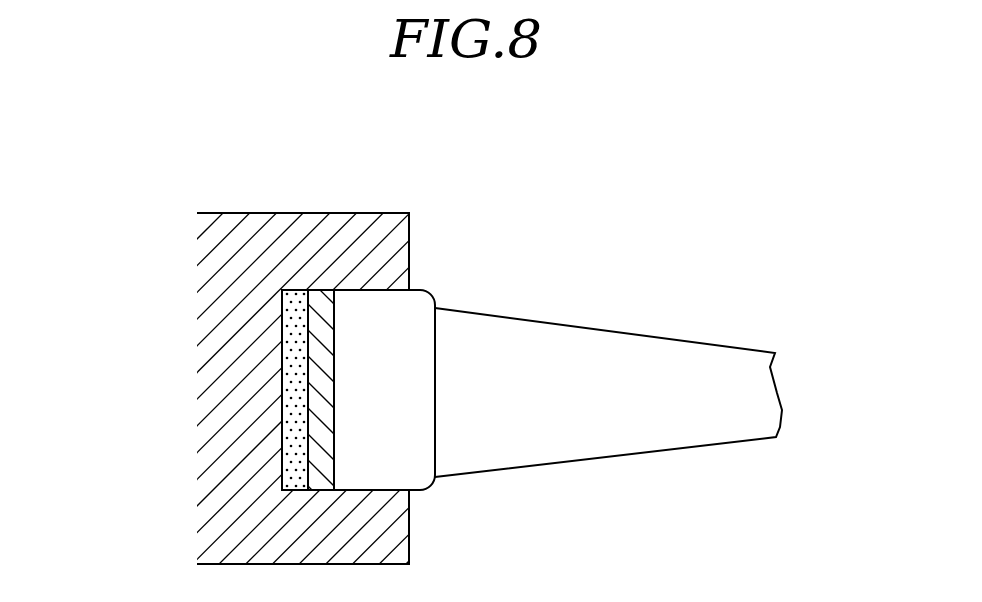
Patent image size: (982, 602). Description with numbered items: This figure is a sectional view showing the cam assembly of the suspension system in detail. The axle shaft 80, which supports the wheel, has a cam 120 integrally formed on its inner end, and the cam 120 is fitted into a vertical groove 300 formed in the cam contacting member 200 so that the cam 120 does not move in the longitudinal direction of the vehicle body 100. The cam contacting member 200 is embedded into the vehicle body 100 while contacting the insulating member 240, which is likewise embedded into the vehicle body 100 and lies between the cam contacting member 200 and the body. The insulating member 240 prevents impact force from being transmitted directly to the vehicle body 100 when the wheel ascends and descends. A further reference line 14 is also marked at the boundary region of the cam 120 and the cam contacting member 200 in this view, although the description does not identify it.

The vehicle body 100 is at (233, 453).
The vertical groove 300 is at (365, 225).
The insulating member 240 is at (293, 333).
The cam contacting member 200 is at (323, 303).
The cam 120 is at (420, 316).
The interface surface 14 is at (327, 412).
The axle shaft 80 is at (670, 310).